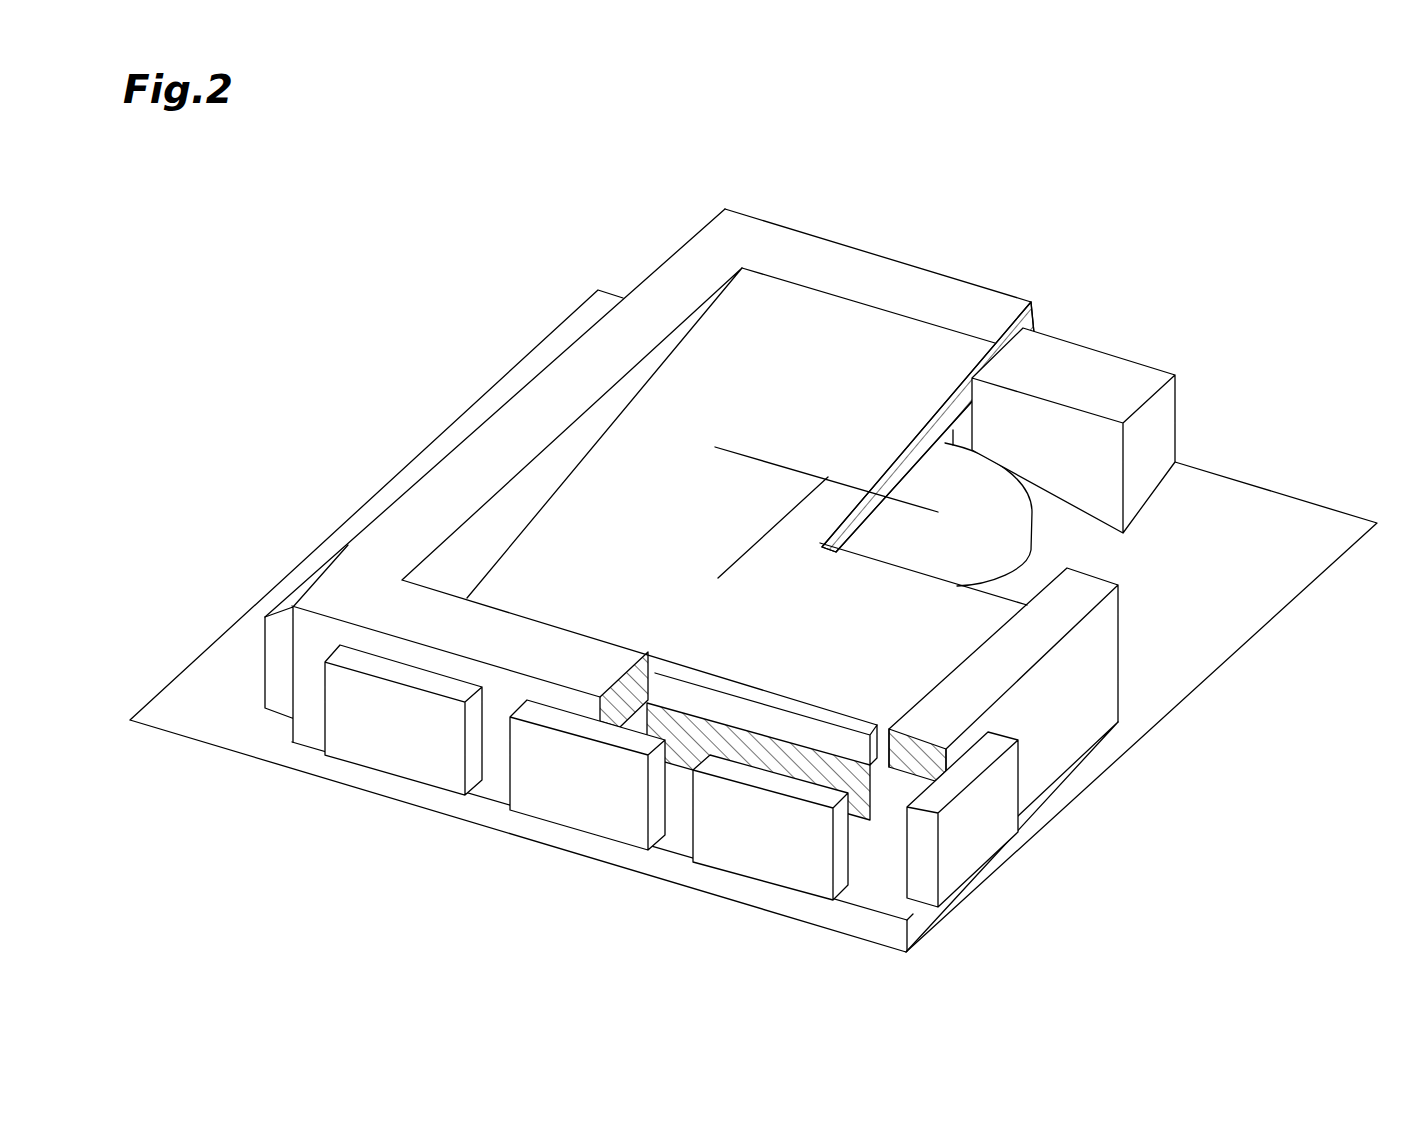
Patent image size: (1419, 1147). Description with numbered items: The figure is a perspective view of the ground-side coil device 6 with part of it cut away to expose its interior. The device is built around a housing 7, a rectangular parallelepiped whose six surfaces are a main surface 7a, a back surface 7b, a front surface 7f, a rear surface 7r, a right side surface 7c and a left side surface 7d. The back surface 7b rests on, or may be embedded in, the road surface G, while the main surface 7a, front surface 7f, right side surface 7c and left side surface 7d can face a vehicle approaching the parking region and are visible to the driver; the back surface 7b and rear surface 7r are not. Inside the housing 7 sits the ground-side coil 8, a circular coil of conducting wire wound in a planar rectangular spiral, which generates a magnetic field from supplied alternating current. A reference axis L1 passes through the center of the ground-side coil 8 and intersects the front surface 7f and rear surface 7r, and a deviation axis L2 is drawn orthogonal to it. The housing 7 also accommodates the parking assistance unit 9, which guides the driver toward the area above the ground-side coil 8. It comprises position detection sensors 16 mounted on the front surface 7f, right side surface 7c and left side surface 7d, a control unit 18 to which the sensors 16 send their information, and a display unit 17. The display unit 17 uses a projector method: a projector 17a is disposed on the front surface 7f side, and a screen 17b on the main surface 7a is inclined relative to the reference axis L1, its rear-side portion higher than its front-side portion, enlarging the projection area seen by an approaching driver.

The ground-side coil device 6 is at (344, 155).
The housing 7 is at (696, 574).
The main surface 7a is at (490, 450).
The back surface 7b is at (1040, 803).
The right side surface 7c is at (1100, 705).
The left side surface 7d is at (280, 640).
The front surface 7f is at (858, 930).
The rear surface 7r is at (1040, 300).
The ground-side coil 8 is at (1040, 530).
The parking assistance unit 9 is at (658, 539).
The position detection sensor 16 is at (265, 705).
The display unit 17 is at (840, 479).
The projector 17a is at (740, 685).
The screen 17b is at (905, 350).
The control unit 18 is at (1110, 345).
The road surface G is at (1278, 508).
The reference axis L1 is at (737, 560).
The deviation axis L2 is at (745, 447).